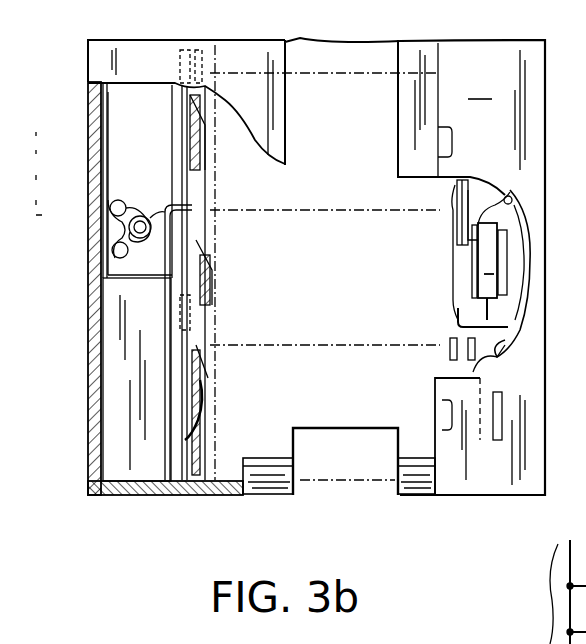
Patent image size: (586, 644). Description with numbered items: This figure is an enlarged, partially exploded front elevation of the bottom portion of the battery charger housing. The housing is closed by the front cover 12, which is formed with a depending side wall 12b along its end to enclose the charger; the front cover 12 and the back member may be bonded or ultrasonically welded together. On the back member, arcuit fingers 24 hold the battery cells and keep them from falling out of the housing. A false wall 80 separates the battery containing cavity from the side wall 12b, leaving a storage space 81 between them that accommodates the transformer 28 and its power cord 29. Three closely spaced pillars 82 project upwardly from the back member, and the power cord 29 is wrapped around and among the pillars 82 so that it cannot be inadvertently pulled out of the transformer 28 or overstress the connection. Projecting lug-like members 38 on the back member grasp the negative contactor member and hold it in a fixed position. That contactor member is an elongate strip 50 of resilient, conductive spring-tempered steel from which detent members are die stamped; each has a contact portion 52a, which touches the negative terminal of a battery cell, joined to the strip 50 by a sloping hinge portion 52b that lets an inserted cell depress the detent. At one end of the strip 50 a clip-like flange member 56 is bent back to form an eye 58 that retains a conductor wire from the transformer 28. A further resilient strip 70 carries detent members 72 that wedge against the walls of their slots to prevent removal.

The front cover 12 is at (316, 266).
The side wall 12b is at (92, 142).
The arcuit fingers 24 is at (268, 480).
The transformer 28 is at (118, 468).
The power cord 29 is at (122, 186).
The lug-like members 38 is at (178, 68).
The elongate strip 50 is at (200, 150).
The contact portion 52a is at (205, 112).
The sloping hinge portion 52b is at (205, 147).
The clip-like flange member 56 is at (197, 422).
The eye 58 is at (200, 396).
The strip 70 is at (457, 312).
The detent members 72 is at (457, 215).
The false wall 80 is at (178, 118).
The storage space 81 is at (104, 182).
The pillars 82 is at (126, 215).